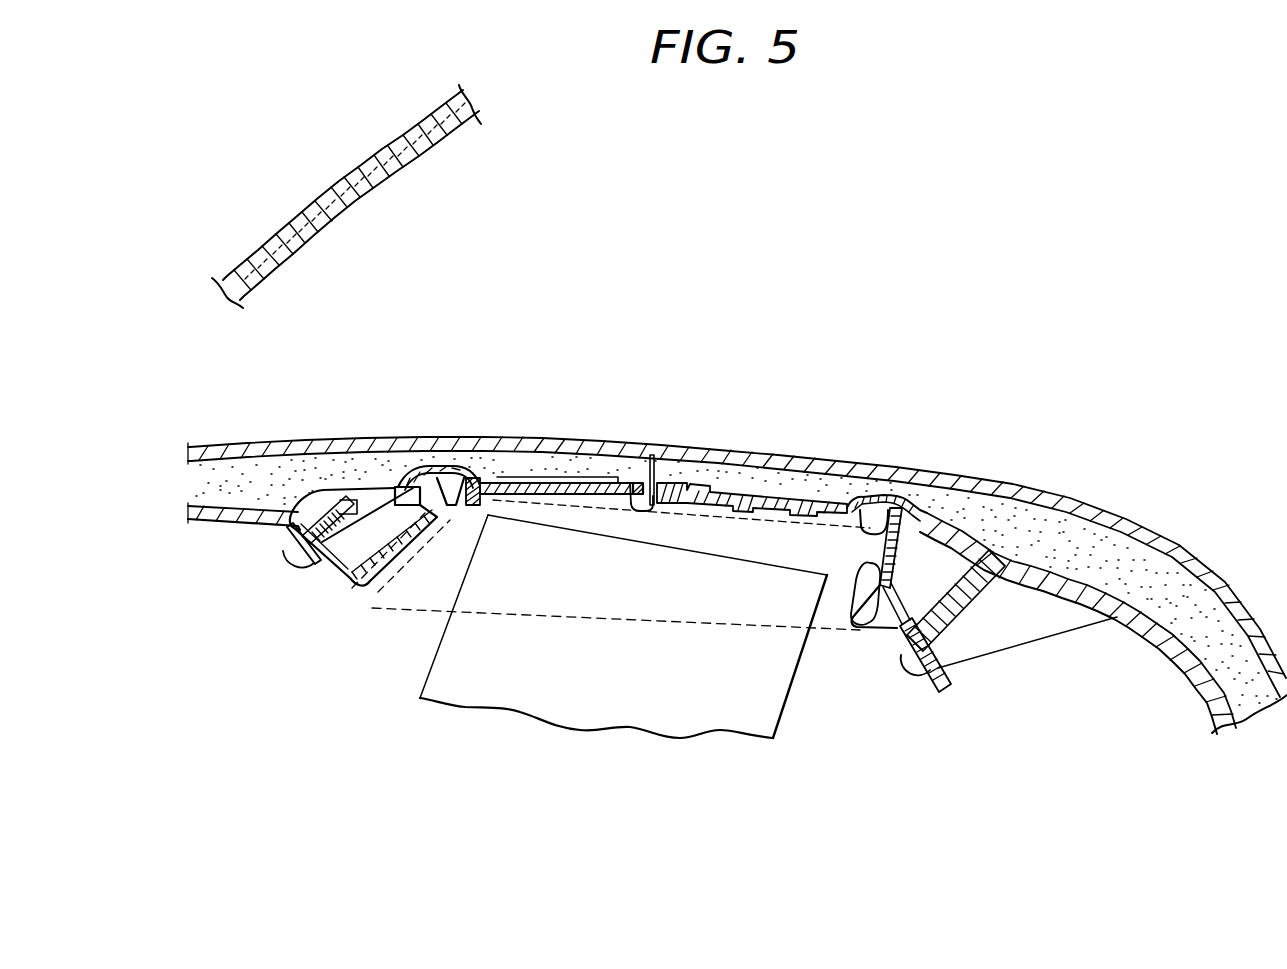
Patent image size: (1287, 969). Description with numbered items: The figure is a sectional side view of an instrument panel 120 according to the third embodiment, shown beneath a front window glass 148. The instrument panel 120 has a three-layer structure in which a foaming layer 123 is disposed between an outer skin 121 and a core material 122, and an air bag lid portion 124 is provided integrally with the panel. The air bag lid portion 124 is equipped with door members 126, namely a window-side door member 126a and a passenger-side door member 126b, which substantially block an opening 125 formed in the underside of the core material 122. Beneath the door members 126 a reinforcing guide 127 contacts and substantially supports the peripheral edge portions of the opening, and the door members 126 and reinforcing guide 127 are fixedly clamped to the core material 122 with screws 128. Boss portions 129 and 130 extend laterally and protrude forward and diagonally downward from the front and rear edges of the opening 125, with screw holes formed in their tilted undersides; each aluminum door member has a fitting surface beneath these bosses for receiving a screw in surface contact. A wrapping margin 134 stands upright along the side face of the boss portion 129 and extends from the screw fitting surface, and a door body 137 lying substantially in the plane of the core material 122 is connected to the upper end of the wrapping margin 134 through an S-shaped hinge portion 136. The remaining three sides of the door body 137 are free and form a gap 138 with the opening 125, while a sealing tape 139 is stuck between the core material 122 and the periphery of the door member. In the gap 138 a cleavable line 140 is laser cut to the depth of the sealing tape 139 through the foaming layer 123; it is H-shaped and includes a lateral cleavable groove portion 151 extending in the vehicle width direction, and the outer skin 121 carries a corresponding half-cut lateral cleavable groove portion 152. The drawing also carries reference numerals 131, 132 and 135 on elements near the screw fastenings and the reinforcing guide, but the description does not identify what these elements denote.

The instrument panel 120 is at (1066, 488).
The outer skin 121 is at (195, 446).
The core material 122 is at (211, 515).
The foaming layer 123 is at (196, 486).
The air bag lid portion 124 is at (712, 449).
The opening 125 is at (430, 470).
The door members 126 is at (683, 419).
The window-side door member 126a is at (533, 483).
The passenger-side door member 126b is at (762, 492).
The reinforcing guide 127 is at (638, 624).
The screws 128 is at (298, 568).
The boss portion 129 is at (289, 529).
The boss portion 130 is at (991, 622).
The bolt 131 is at (327, 566).
The hatched flange 132 is at (362, 585).
The wrapping margin 134 is at (357, 497).
The module box 135 is at (793, 722).
The hinge portion 136 is at (467, 483).
The door body 137 is at (557, 483).
The gap 138 is at (636, 483).
The sealing tape 139 is at (411, 486).
The cleavable line 140 is at (756, 276).
The front window glass 148 is at (397, 186).
The lateral cleavable groove portion 151 is at (677, 460).
The half-cut lateral cleavable groove portion 152 is at (652, 454).